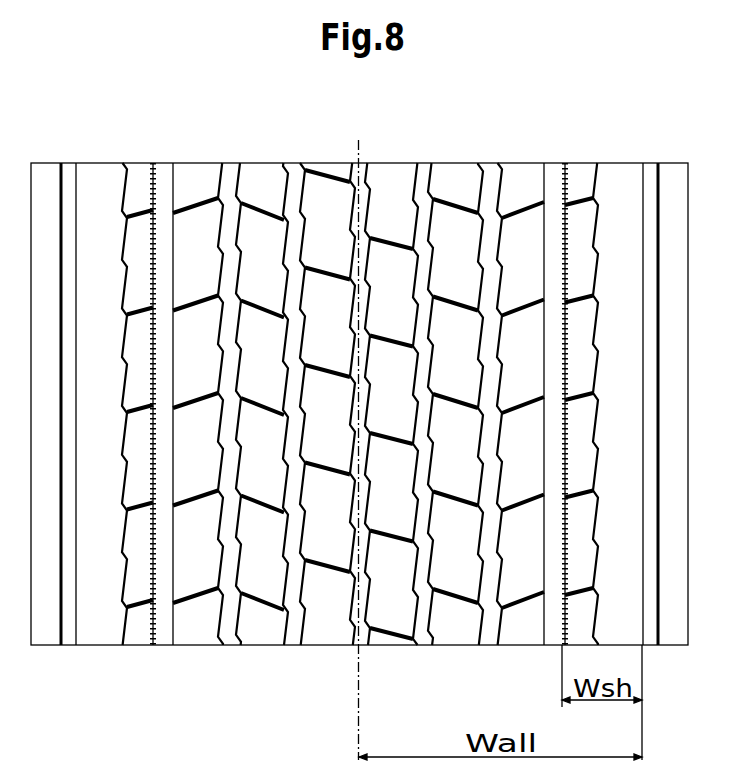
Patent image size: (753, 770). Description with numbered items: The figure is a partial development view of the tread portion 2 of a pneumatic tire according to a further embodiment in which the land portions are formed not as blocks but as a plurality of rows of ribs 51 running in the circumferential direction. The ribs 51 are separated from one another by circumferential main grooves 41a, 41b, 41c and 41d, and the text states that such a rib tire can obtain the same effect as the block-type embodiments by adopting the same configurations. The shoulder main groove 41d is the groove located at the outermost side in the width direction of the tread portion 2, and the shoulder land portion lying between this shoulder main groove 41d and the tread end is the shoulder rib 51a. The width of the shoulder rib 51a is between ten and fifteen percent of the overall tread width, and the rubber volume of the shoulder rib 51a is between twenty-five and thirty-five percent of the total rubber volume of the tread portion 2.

The tread portion 2 is at (196, 163).
The rib 51 is at (322, 190).
The shoulder rib 51a is at (615, 180).
The main groove 41a is at (358, 158).
The main groove 41b is at (425, 173).
The main groove 41c is at (492, 173).
The shoulder main groove 41d is at (553, 173).